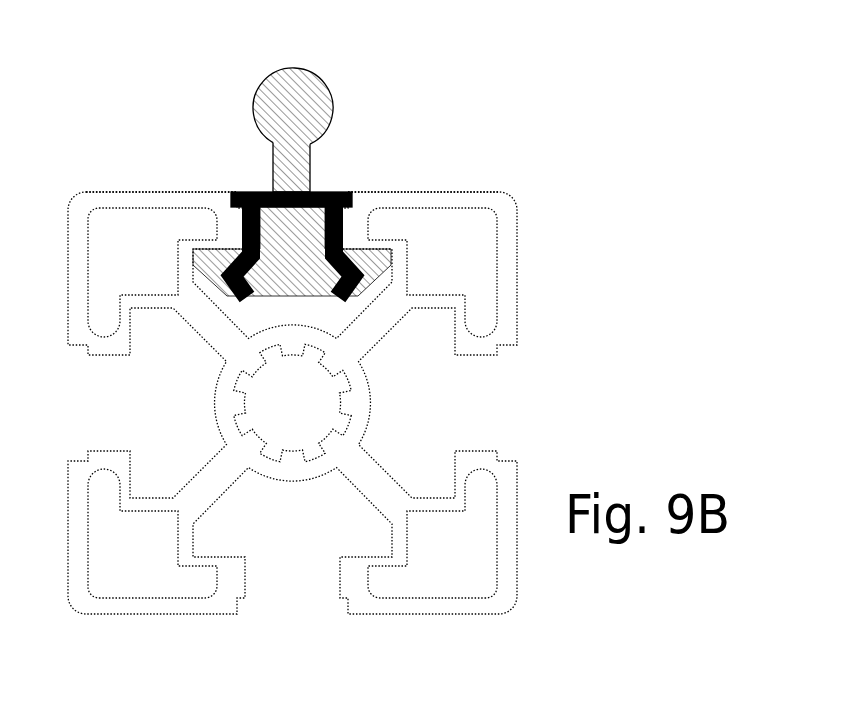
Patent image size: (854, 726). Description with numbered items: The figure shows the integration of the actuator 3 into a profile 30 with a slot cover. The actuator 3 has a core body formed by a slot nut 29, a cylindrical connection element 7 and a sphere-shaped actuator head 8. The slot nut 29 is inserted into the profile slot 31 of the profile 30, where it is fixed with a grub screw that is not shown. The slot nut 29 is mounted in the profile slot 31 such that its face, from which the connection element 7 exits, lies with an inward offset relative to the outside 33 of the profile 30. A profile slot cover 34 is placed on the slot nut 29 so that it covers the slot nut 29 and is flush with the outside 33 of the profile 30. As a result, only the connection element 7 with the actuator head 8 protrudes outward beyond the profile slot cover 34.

The actuator 3 is at (280, 160).
The connection element 7 is at (273, 168).
The actuator head 8 is at (320, 80).
The slot nut 29 is at (308, 267).
The profile 30 is at (342, 368).
The profile slot 31 is at (342, 320).
The outside 33 is at (445, 191).
The profile slot cover 34 is at (333, 192).